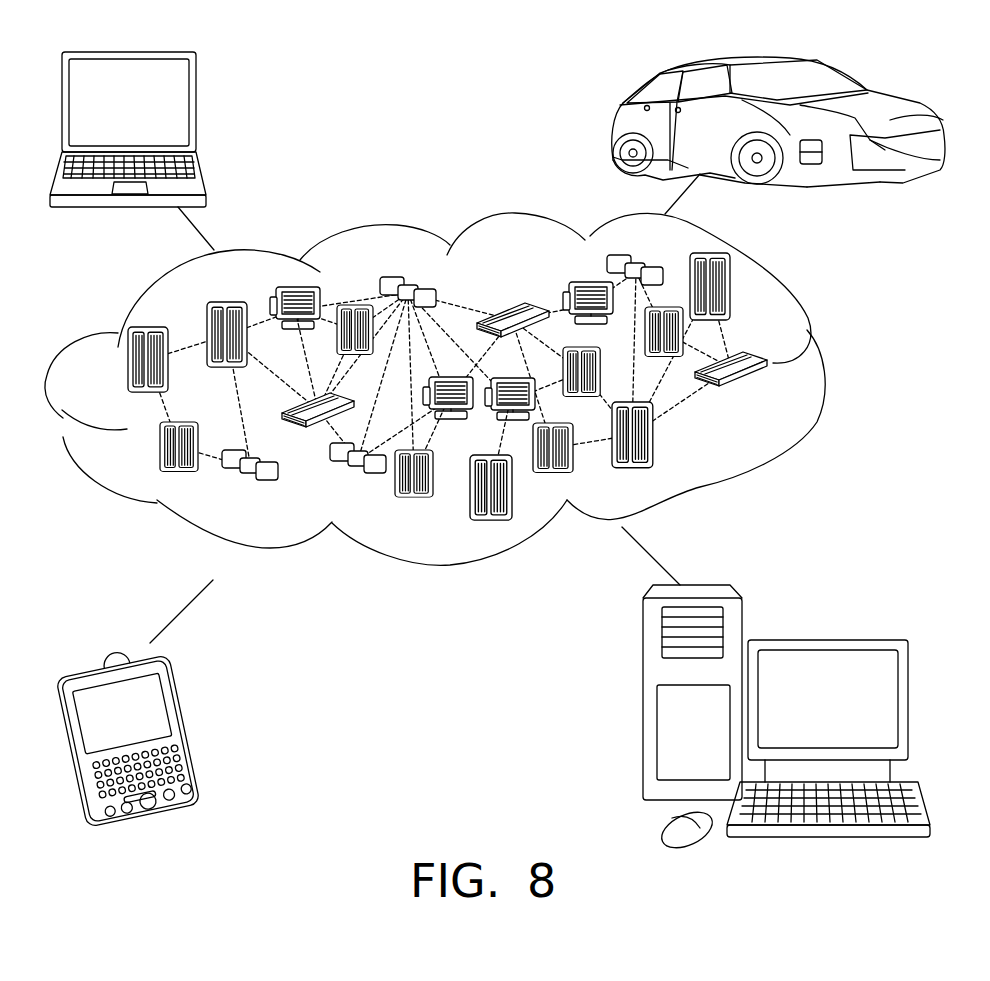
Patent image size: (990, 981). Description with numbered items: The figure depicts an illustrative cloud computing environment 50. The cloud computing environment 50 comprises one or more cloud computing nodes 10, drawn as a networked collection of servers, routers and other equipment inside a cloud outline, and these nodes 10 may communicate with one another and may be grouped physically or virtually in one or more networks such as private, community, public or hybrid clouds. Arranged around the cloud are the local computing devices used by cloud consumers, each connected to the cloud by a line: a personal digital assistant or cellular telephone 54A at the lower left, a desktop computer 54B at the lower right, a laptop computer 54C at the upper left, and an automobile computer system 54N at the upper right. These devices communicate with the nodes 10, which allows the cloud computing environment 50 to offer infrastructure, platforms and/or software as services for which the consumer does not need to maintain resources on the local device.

The cloud computing node 10 is at (776, 397).
The cloud computing environment 50 is at (463, 389).
The personal digital assistant or cellular telephone 54A is at (182, 727).
The desktop computer 54B is at (823, 635).
The laptop computer 54C is at (196, 110).
The automobile computer system 54N is at (612, 125).